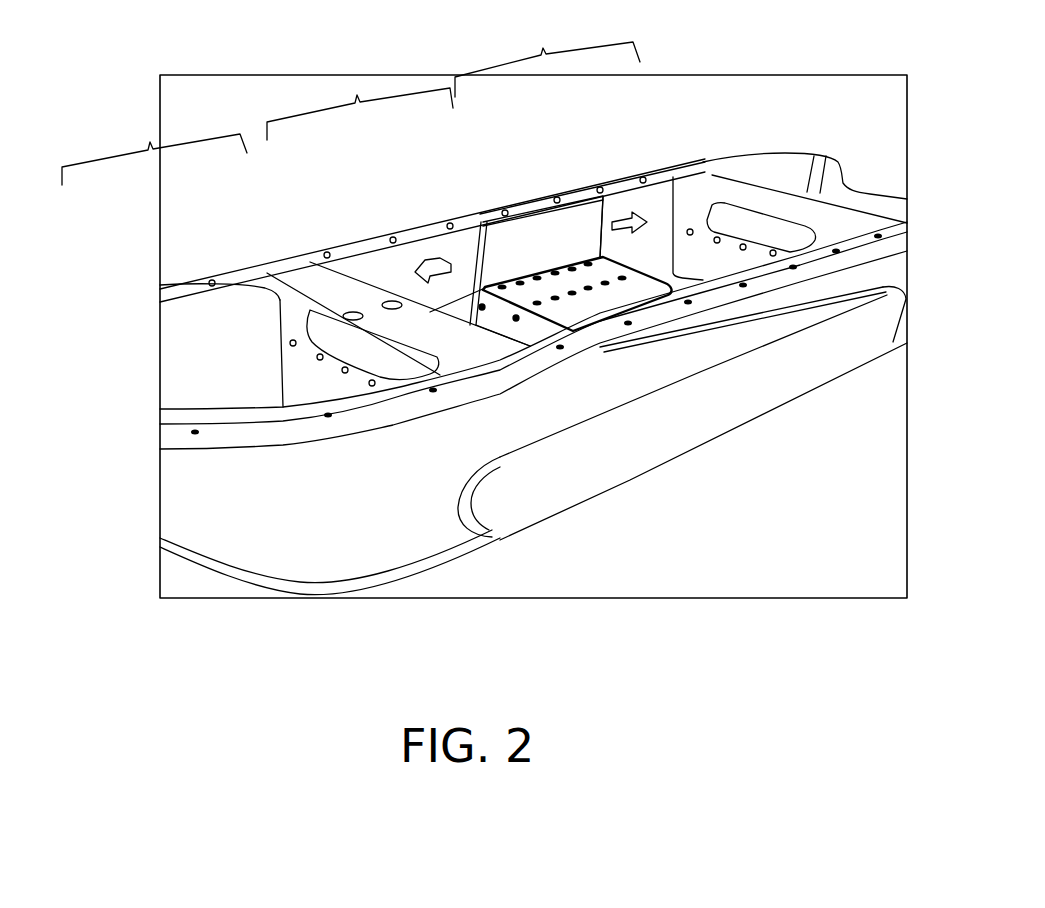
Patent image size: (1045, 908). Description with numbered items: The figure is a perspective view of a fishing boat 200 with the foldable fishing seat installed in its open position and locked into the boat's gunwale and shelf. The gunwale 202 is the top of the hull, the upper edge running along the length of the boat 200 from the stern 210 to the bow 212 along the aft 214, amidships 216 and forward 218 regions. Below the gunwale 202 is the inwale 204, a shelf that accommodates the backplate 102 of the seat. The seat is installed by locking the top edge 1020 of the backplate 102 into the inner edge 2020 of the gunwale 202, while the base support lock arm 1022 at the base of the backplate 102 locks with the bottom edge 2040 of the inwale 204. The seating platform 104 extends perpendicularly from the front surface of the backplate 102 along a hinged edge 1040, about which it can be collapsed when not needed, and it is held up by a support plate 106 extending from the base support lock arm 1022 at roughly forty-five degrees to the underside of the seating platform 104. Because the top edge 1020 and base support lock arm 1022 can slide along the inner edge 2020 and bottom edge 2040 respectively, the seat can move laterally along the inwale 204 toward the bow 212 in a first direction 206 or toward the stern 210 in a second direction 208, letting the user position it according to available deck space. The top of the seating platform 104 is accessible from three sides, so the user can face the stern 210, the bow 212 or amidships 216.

The fishing boat 200 is at (130, 305).
The gunwale 202 is at (620, 200).
The inner edge of the gunwale 2020 is at (612, 188).
The inwale 204 is at (453, 247).
The bottom edge of the inwale 2040 is at (680, 278).
The first direction 206 is at (413, 265).
The second direction 208 is at (653, 228).
The stern 210 is at (858, 190).
The bow 212 is at (160, 417).
The aft 214 is at (460, 73).
The amidships 216 is at (302, 115).
The forward 218 is at (125, 152).
The backplate 102 is at (517, 248).
The top edge of the backplate 1020 is at (555, 203).
The base support lock arm 1022 is at (517, 307).
The seating platform 104 is at (590, 297).
The hinged edge 1040 is at (597, 253).
The support plate 106 is at (520, 310).